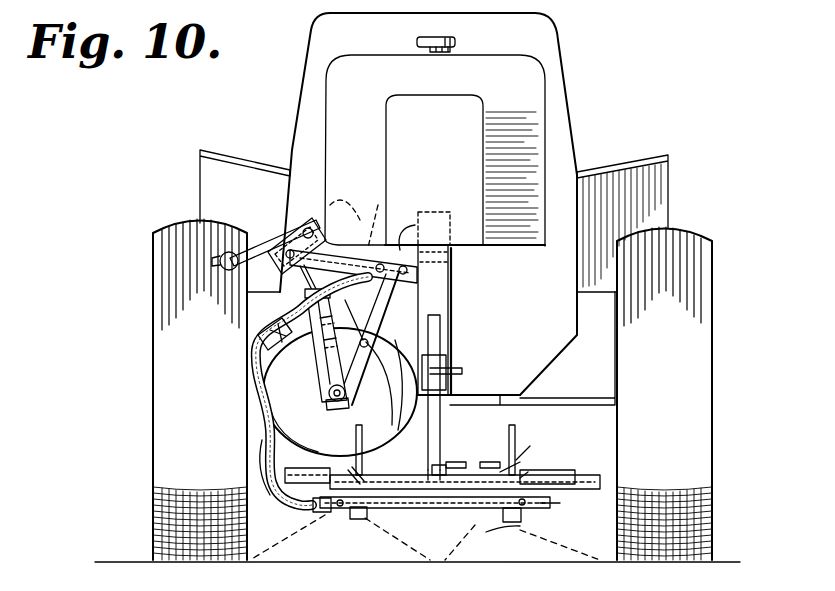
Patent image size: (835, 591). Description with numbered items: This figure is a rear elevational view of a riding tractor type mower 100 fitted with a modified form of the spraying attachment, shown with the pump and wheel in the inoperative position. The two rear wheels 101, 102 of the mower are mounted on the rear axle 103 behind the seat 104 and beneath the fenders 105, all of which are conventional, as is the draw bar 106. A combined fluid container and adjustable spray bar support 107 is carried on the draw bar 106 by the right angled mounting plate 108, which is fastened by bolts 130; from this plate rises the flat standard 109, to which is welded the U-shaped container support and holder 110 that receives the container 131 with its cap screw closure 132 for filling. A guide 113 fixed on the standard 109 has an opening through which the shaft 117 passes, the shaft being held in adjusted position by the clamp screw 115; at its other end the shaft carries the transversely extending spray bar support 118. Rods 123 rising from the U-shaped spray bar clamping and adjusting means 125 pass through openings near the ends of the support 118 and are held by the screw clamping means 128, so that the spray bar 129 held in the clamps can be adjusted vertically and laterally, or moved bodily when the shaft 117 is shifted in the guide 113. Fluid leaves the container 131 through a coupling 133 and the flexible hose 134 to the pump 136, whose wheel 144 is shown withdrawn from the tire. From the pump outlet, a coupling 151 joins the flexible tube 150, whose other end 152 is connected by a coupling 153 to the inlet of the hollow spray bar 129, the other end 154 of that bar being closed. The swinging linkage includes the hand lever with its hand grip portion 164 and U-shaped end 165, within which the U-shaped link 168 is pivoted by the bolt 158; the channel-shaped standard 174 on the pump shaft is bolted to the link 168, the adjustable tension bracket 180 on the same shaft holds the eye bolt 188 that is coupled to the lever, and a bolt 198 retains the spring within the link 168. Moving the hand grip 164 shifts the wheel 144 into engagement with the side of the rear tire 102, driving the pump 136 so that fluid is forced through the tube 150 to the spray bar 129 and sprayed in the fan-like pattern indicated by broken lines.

The riding tractor type mower 100 is at (600, 122).
The rear wheel 101 is at (700, 362).
The rear wheel 102 is at (153, 342).
The rear axle 103 is at (580, 392).
The seat 104 is at (560, 50).
The fenders 105 is at (208, 166).
The draw bar 106 is at (462, 402).
The combined fluid container and adjustable spray bar support 107 is at (452, 318).
The right angled mounting plate 108 is at (456, 466).
The flat standard 109 is at (460, 306).
The U-shaped container support and holder 110 is at (456, 108).
The guide 113 is at (456, 350).
The clamp screw 115 is at (458, 368).
The shaft 117 is at (446, 446).
The spray bar support 118 is at (452, 510).
The rod 123 is at (356, 442).
The U-shaped spray bar clamping and adjusting means 125 is at (530, 530).
The screw clamping means 128 is at (518, 470).
The spray bar 129 is at (511, 524).
The bolts 130 is at (392, 402).
The container 131 is at (350, 103).
The cap screw closure 132 is at (415, 40).
The coupling 133 is at (372, 216).
The flexible hose 134 is at (378, 338).
The pump 136 is at (374, 383).
The wheel 144 is at (392, 492).
The flexible tube 150 is at (280, 505).
The coupling 151 is at (256, 366).
The other end of tube 152 is at (318, 514).
The coupling 153 is at (358, 521).
The other end of spray bar 154 is at (548, 504).
The bolt 158 is at (303, 345).
The hand grip portion 164 is at (236, 244).
The U-shaped end 165 is at (302, 224).
The U-shaped link 168 is at (346, 240).
The channel-shaped standard 174 is at (436, 300).
The adjustable tension bracket 180 is at (321, 409).
The eye bolt 188 is at (258, 330).
The bolt 198 is at (400, 240).